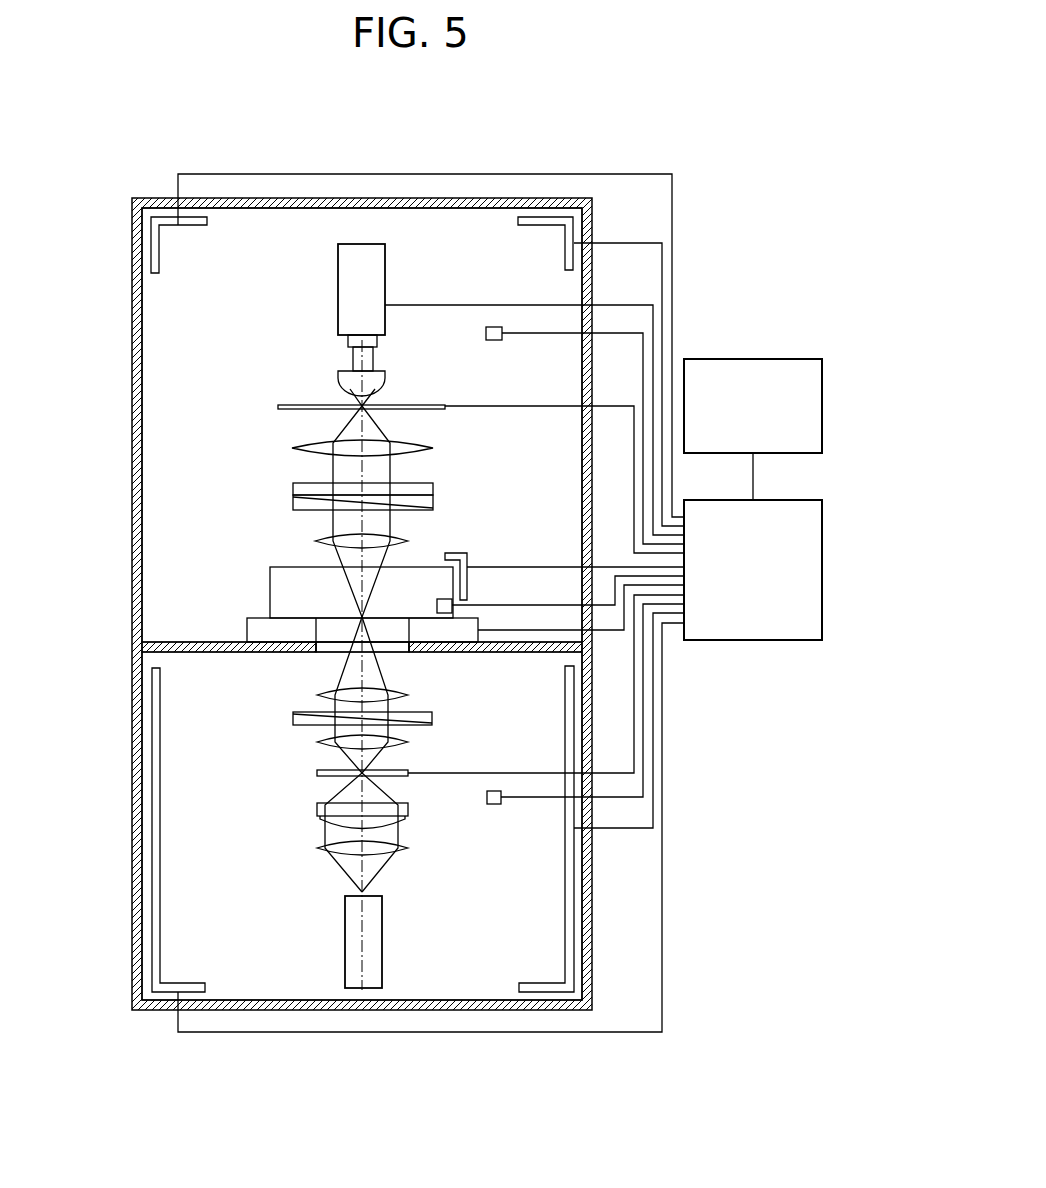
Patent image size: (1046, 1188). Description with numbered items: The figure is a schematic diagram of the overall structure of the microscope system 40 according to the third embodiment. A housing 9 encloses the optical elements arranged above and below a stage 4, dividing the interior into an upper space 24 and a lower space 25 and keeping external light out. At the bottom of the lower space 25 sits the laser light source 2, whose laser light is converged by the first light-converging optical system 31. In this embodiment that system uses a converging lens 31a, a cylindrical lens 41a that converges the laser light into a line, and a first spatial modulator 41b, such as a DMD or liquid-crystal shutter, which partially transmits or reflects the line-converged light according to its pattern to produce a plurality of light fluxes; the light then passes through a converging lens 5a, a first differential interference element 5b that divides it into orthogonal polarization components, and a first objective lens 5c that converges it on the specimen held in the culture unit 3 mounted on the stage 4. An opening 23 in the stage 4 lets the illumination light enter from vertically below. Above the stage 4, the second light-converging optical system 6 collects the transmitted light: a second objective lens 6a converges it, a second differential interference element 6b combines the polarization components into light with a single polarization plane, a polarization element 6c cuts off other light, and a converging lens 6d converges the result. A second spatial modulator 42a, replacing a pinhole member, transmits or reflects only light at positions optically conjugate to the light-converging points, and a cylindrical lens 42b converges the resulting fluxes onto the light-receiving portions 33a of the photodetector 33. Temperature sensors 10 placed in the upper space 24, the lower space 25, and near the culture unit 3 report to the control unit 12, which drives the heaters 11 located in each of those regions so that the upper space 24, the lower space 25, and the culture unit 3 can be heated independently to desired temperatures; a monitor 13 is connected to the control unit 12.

The laser light source 2 is at (345, 938).
The culture unit 3 is at (278, 581).
The stage 4 is at (247, 628).
The converging lens 5a is at (317, 742).
The first differential interference element 5b is at (293, 718).
The first objective lens 5c is at (317, 695).
The second light-converging optical system 6 is at (276, 466).
The second objective lens 6a is at (408, 541).
The second differential interference element 6b is at (433, 505).
The polarization element 6c is at (433, 485).
The converging lens 6d is at (433, 446).
The housing 9 is at (132, 405).
The temperature sensors 10 is at (486, 333).
The heaters 11 is at (185, 228).
The control unit 12 is at (757, 640).
The monitor 13 is at (752, 358).
The opening 23 is at (410, 646).
The upper space 24 is at (183, 338).
The lower space 25 is at (195, 730).
The first light-converging optical system 31 is at (431, 890).
The converging lens 31a is at (317, 848).
The photodetector 33 is at (338, 265).
The light-receiving portions 33a is at (348, 343).
The microscope system 40 is at (680, 124).
The cylindrical lens 41a is at (317, 808).
The first spatial modulator 41b is at (317, 773).
The second spatial modulator 42a is at (283, 405).
The cylindrical lens 42b is at (385, 377).